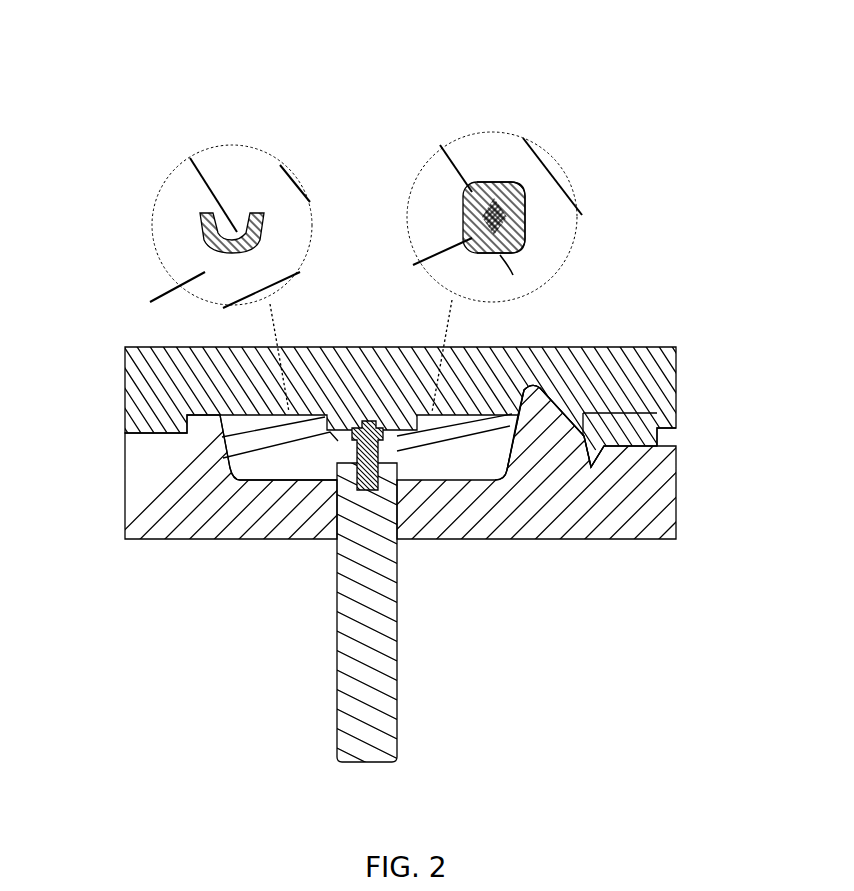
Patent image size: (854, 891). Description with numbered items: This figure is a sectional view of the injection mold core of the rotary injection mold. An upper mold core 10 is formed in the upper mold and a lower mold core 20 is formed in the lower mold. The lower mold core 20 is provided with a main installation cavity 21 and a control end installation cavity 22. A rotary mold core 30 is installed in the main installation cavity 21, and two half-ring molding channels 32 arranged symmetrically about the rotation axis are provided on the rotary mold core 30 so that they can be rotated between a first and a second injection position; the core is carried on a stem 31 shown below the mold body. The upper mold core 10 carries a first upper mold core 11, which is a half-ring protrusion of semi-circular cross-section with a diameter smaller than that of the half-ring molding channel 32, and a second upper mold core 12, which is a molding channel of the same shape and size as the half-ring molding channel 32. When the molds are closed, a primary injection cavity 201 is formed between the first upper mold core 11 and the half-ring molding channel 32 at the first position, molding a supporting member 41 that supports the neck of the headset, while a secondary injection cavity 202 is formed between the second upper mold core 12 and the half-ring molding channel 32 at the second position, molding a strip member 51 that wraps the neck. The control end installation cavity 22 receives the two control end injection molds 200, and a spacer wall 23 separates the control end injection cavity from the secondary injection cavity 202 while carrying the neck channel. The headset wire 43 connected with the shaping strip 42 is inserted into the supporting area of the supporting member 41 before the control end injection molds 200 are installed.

The upper mold core 10 is at (237, 173).
The first upper mold core 11 is at (215, 215).
The second upper mold core 12 is at (497, 182).
The lower mold core 20 is at (558, 508).
The main installation cavity 21 is at (282, 482).
The control end installation cavity 22 is at (677, 418).
The spacer wall 23 is at (535, 398).
The rotary mold core 30 is at (207, 273).
The stem 31 is at (367, 598).
The half-ring molding channel 32 is at (212, 252).
The supporting member 41 is at (257, 215).
The shaping strip 42 is at (523, 238).
The headset wire 43 is at (525, 213).
The strip member 51 is at (525, 202).
The control end injection mold 200 is at (595, 453).
The primary injection cavity 201 is at (208, 228).
The secondary injection cavity 202 is at (458, 185).